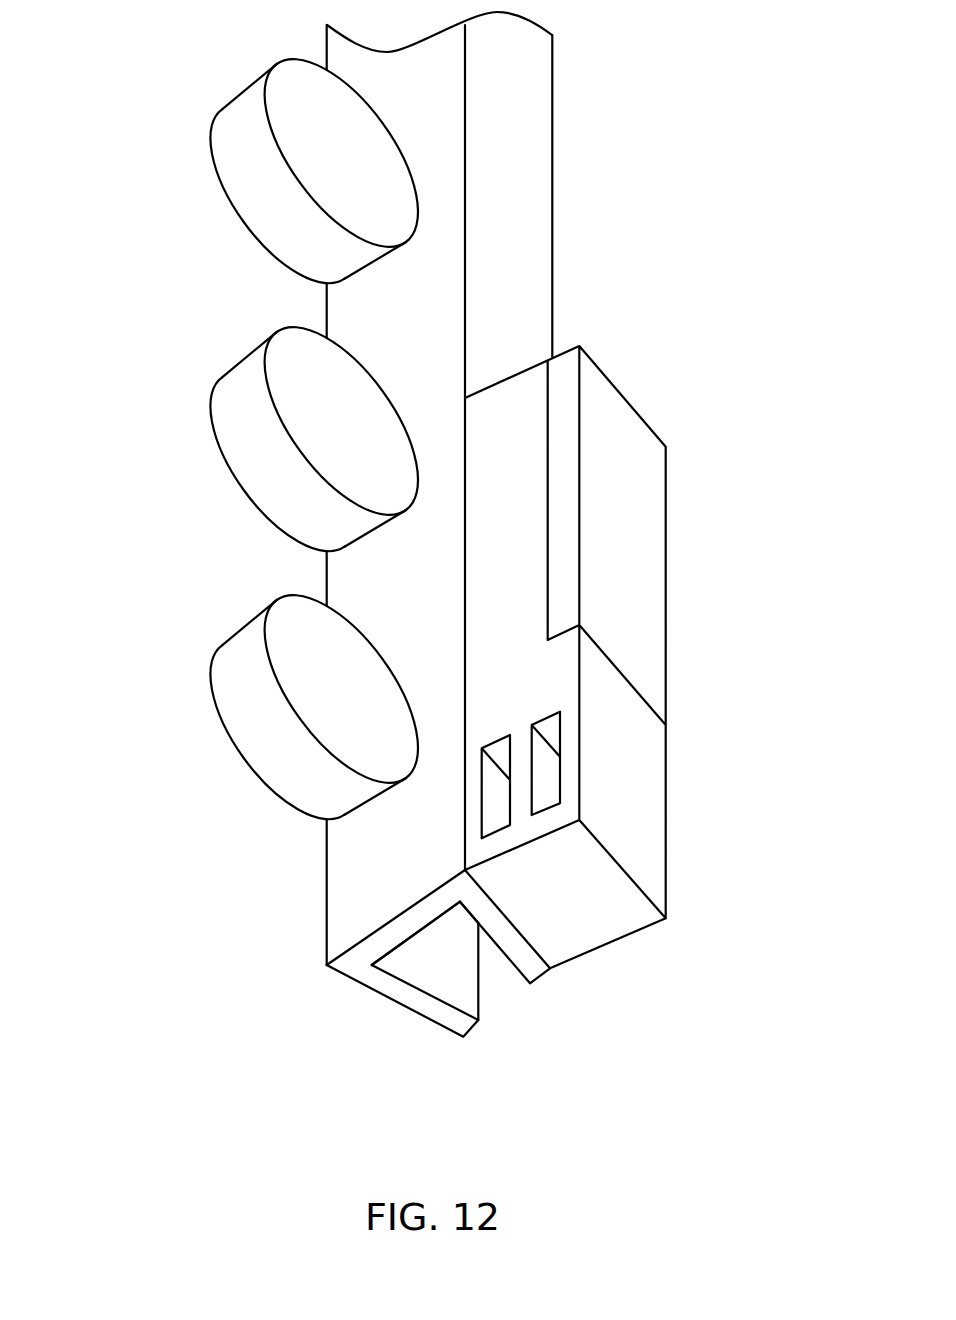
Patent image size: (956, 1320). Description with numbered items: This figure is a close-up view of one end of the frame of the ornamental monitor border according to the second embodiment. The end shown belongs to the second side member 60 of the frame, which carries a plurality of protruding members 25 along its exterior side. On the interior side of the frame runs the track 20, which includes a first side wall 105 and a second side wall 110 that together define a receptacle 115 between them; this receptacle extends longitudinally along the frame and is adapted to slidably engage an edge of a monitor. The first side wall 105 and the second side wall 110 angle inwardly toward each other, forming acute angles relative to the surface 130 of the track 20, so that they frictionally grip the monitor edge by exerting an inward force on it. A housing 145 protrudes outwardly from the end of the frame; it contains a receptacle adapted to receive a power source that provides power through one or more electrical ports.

The track 20 is at (436, 573).
The protruding members 25 is at (240, 433).
The second side member 60 is at (535, 168).
The first side wall 105 is at (515, 950).
The second side wall 110 is at (377, 985).
The receptacle 115 is at (467, 971).
The surface of the track 130 is at (458, 965).
The housing 145 is at (643, 539).